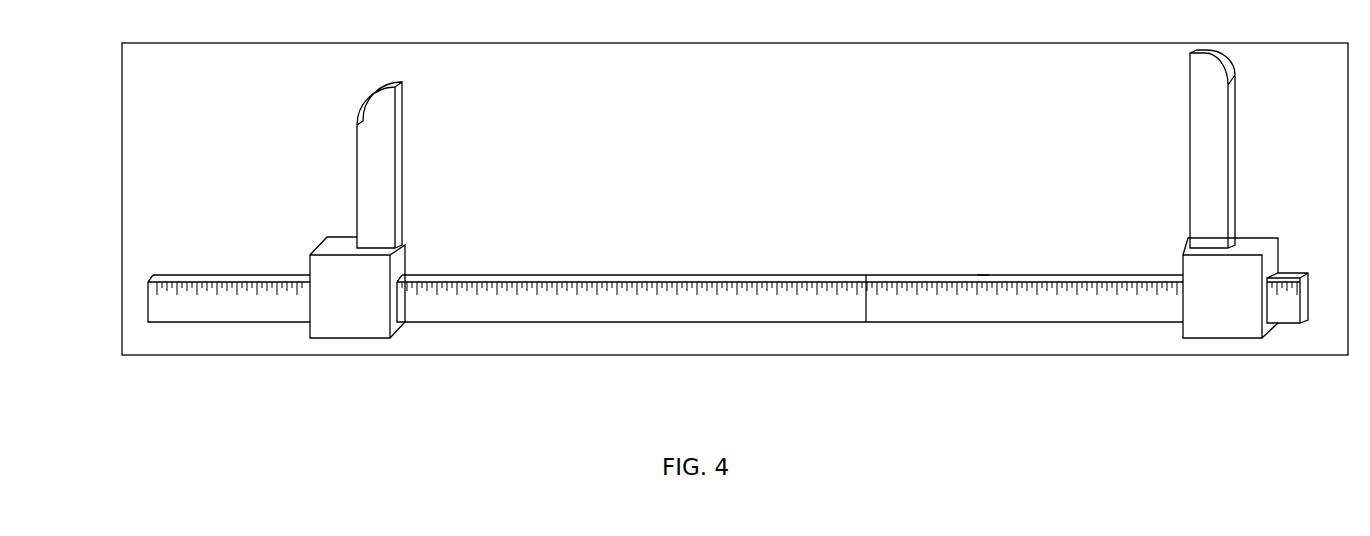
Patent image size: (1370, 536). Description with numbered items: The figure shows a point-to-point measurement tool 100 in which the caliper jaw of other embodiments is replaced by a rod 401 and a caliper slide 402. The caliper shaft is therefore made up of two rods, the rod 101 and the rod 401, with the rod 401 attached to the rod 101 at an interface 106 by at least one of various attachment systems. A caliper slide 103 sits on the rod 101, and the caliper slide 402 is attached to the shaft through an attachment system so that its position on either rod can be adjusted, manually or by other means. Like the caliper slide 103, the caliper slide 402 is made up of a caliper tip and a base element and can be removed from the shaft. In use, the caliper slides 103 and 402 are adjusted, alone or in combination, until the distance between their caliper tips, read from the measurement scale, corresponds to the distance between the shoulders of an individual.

The point-to-point measurement tool 100 is at (708, 199).
The rod 101 is at (223, 253).
The caliper slide 103 is at (420, 212).
The interface 106 is at (872, 254).
The rod 401 is at (983, 254).
The caliper slide 402 is at (1175, 212).